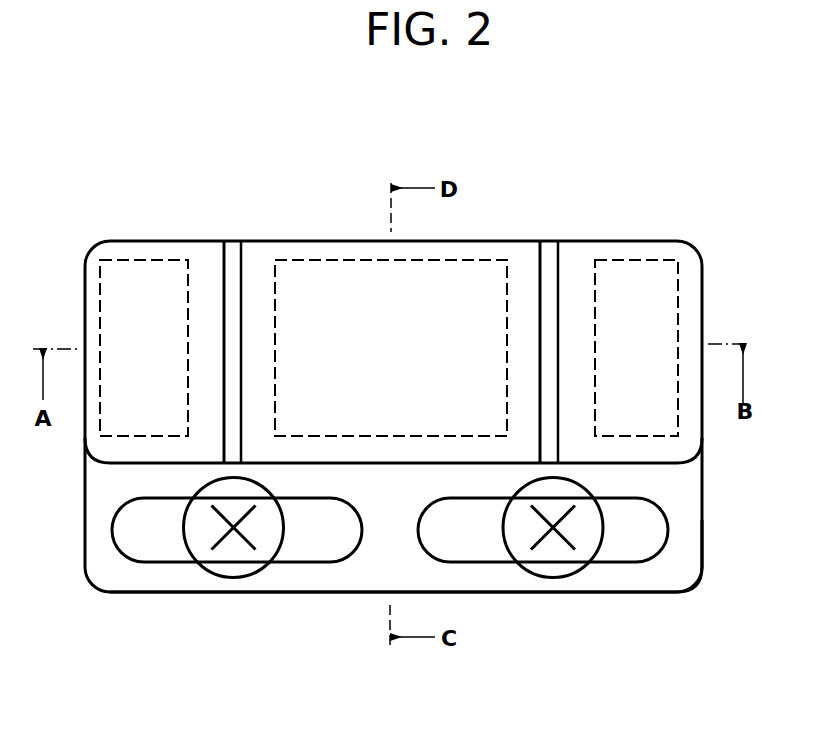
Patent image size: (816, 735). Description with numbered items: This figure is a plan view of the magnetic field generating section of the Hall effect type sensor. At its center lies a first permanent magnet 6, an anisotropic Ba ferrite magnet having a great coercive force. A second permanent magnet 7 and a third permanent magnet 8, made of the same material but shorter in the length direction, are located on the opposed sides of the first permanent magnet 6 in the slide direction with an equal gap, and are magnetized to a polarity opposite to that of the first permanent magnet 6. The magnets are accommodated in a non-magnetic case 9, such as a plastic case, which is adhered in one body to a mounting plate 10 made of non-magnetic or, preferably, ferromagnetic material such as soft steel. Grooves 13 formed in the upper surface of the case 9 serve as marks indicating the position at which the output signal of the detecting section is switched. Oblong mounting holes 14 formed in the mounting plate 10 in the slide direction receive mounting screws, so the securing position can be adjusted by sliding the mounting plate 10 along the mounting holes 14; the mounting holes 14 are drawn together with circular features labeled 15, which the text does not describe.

The first permanent magnet 6 is at (472, 270).
The second permanent magnet 7 is at (137, 272).
The third permanent magnet 8 is at (627, 275).
The non-magnetic case 9 is at (700, 247).
The mounting plate 10 is at (683, 592).
The grooves 13 is at (241, 243).
The oblong mounting holes 14 is at (309, 545).
The push button 15 is at (228, 567).